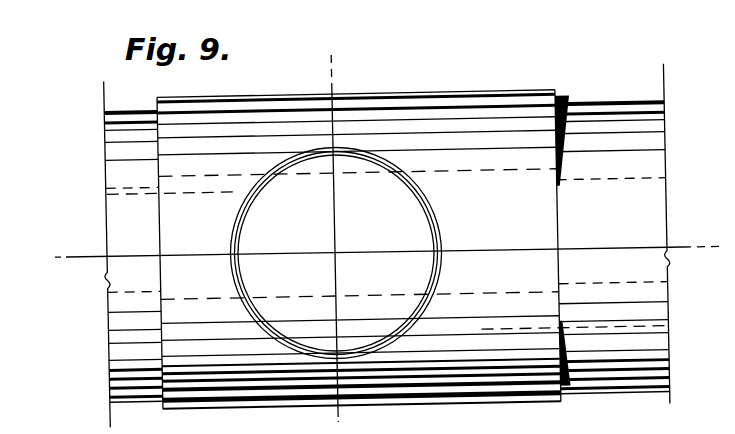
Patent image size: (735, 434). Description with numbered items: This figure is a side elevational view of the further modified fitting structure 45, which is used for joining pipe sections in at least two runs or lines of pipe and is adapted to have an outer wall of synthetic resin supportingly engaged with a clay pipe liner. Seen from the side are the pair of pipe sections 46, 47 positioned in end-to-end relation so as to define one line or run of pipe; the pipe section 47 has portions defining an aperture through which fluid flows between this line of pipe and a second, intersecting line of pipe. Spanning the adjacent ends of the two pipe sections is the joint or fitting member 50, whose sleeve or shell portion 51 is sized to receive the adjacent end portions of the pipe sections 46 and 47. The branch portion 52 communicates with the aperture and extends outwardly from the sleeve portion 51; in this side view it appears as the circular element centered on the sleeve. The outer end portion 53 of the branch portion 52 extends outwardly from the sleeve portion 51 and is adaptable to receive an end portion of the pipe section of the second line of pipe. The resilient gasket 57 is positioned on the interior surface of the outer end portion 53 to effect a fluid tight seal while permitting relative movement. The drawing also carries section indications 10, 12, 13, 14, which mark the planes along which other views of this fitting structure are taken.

The section line 10- 10 is at (51, 276).
The section line 12- 12 is at (333, 45).
The section line 13- 13 is at (124, 194).
The section line 14- 14 is at (500, 342).
The fitting structure 45 is at (552, 82).
The pipe section 46 is at (609, 98).
The pipe section 47 is at (129, 105).
The joint or fitting member 50 is at (493, 92).
The sleeve or shell portion 51 is at (435, 126).
The branch portion 52 is at (437, 203).
The outer end portion 53 is at (444, 263).
The resilient gasket 57 is at (430, 291).